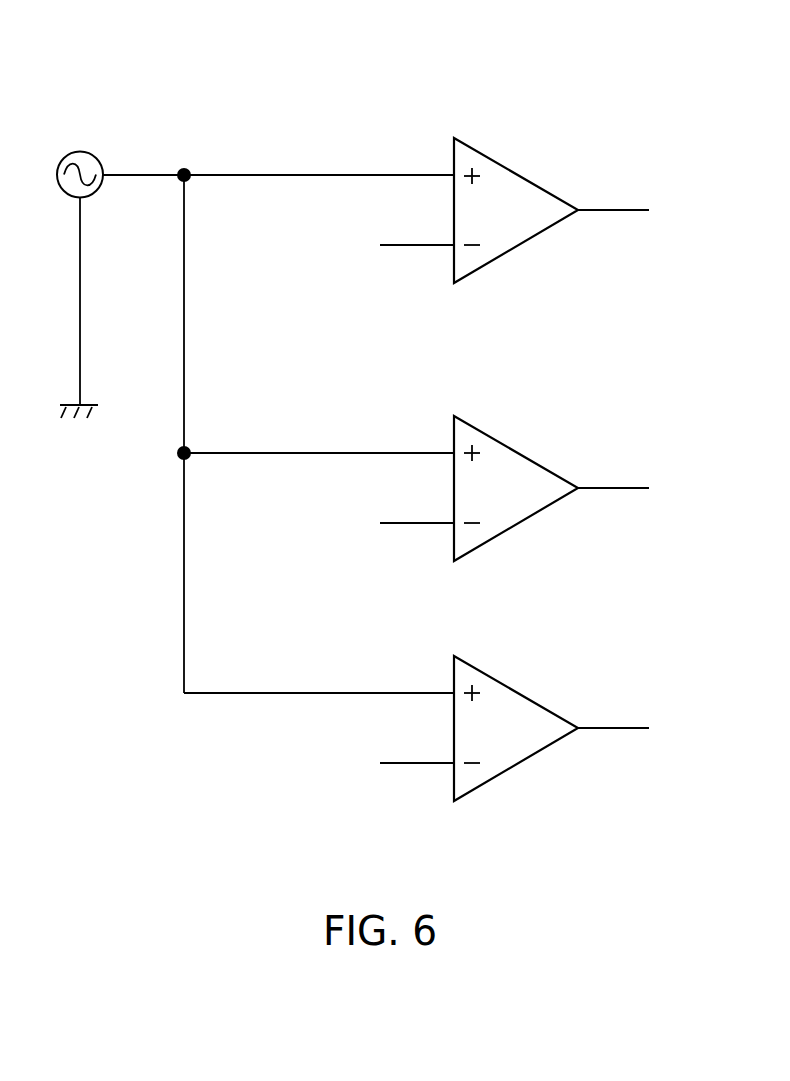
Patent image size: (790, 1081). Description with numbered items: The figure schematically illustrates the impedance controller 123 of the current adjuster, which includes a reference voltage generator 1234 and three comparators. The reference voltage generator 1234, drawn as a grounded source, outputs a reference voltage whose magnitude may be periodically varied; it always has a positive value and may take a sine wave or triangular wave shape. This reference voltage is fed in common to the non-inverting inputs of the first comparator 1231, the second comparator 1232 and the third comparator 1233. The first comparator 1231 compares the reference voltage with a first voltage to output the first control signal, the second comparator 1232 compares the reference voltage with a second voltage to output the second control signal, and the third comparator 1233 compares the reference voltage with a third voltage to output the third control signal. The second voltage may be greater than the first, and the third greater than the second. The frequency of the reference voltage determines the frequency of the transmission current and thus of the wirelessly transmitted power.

The impedance controller 123 is at (385, 34).
The reference voltage generator 1234 is at (93, 152).
The first comparator 1231 is at (512, 168).
The second comparator 1232 is at (517, 448).
The third comparator 1233 is at (517, 688).